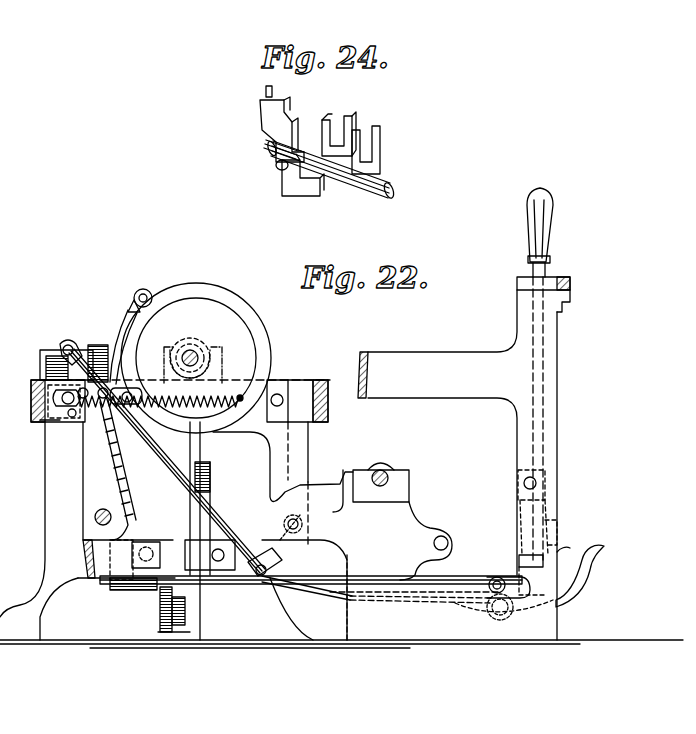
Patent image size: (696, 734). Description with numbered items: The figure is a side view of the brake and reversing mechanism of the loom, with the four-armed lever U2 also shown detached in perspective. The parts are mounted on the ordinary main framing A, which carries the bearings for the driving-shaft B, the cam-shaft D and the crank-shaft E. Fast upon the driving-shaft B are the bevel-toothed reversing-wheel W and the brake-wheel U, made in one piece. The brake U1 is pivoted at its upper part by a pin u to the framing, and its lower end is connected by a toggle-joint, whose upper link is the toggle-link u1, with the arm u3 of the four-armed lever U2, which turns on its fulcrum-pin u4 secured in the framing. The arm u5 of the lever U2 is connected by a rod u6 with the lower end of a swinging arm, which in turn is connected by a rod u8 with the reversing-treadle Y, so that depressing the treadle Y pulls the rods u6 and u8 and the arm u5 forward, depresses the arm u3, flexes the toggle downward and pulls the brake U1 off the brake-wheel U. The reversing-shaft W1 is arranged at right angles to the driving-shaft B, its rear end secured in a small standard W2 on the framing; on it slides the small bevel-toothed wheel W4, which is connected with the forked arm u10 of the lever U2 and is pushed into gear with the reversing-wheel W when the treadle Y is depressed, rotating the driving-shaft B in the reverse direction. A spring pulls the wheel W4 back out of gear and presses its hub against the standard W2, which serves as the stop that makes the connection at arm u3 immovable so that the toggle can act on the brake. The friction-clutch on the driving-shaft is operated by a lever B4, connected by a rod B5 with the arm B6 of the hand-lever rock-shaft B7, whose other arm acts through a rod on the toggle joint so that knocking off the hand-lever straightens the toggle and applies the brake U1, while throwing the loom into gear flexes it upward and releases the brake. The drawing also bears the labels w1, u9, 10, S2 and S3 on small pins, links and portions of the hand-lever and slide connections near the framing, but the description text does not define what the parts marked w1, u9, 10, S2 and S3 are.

In FIG. 24, the four-armed lever U2 is at (330, 171).
In FIG. 24, the arm of the four-armed lever u5 is at (292, 124).
In FIG. 24, the forked arm u10 is at (347, 133).
In FIG. 24, the fulcrum-pin u4 is at (334, 167).
In FIG. 22, the fulcrum-pin u4 is at (60, 398).
In FIG. 24, the pin u is at (275, 163).
In FIG. 22, the pin u is at (140, 293).
In FIG. 22, the bevel-toothed reversing-wheel W is at (196, 356).
In FIG. 22, the brake-wheel U is at (150, 342).
In FIG. 22, the driving-shaft B is at (194, 343).
In FIG. 22, the brake U1 is at (126, 362).
In FIG. 22, the rod u8 is at (238, 396).
In FIG. 22, the lever B4 is at (259, 510).
In FIG. 22, the main framing A is at (341, 462).
In FIG. 22, the reversing-shaft W1 is at (40, 360).
In FIG. 22, the standard W2 is at (62, 346).
In FIG. 22, the bevel-toothed wheel W4 is at (100, 345).
In FIG. 22, the arm of the four-armed lever u3 is at (45, 422).
In FIG. 22, the pin w1 is at (72, 417).
In FIG. 22, the toggle-link u1 is at (99, 388).
In FIG. 22, the rod u6 is at (175, 462).
In FIG. 22, the strap link u9 is at (124, 470).
In FIG. 22, the cam-shaft D is at (99, 510).
In FIG. 22, the arm B6 is at (150, 586).
In FIG. 22, the rod B5 is at (186, 630).
In FIG. 22, the bar 10 is at (311, 590).
In FIG. 22, the knuckle pin w is at (233, 558).
In FIG. 22, the crank-shaft E is at (392, 521).
In FIG. 22, the hand-lever rock-shaft B7 is at (373, 545).
In FIG. 22, the handle S2 is at (547, 232).
In FIG. 22, the slide S3 is at (537, 532).
In FIG. 22, the reversing-treadle Y is at (529, 582).